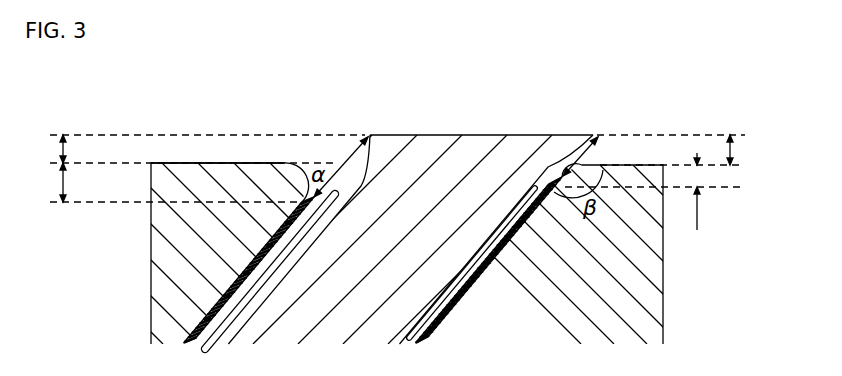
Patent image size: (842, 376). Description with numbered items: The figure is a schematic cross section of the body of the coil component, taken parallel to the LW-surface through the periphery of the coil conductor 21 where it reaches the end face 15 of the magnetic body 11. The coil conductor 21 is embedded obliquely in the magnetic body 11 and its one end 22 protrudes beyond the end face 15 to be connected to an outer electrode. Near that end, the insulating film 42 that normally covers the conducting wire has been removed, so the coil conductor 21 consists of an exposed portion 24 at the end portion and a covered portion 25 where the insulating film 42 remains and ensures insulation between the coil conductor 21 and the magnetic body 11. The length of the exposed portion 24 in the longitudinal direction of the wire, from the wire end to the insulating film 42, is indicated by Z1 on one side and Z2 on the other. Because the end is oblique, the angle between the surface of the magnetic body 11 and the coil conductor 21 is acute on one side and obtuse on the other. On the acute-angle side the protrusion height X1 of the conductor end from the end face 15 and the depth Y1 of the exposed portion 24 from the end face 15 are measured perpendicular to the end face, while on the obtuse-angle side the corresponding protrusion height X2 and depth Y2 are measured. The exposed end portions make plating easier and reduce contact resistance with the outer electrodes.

The magnetic body 11 is at (250, 183).
The end face 15 is at (190, 163).
The coil conductor 21 is at (417, 172).
The one end of the coil conductor 22 is at (563, 135).
The exposed portion 24 is at (352, 190).
The covered portion 25 is at (268, 282).
The insulating film 42 is at (232, 272).
The protrusion height X1 is at (81, 150).
The depth of the exposed portion Y1 is at (81, 182).
The protrusion height X2 is at (748, 150).
The depth of the exposed portion Y2 is at (713, 193).
The length of the exposed portion Z1 is at (352, 150).
The length of the exposed portion Z2 is at (599, 140).